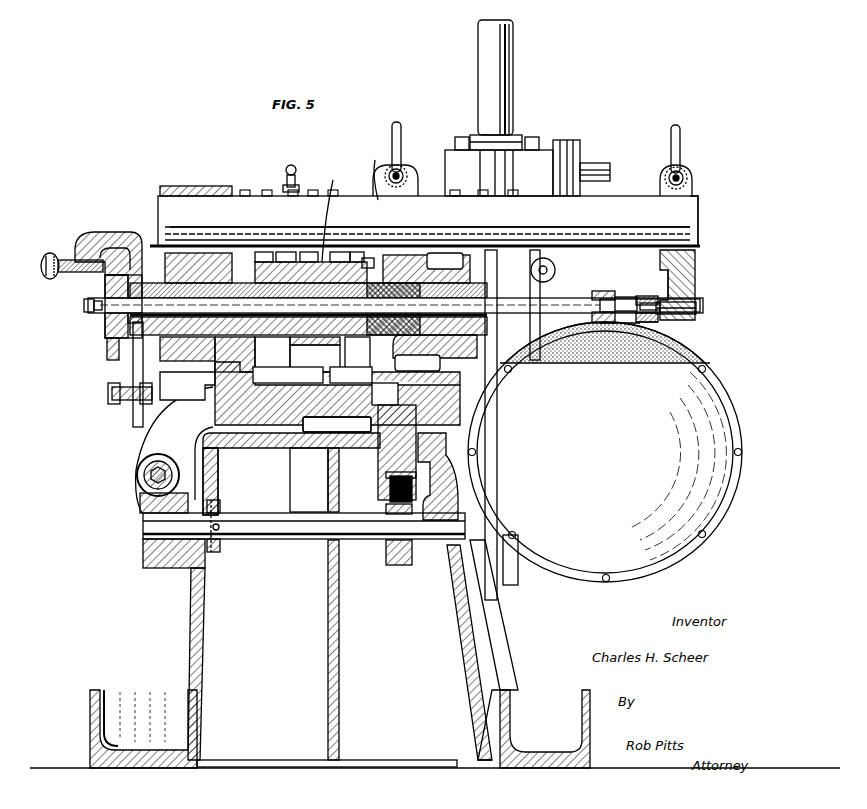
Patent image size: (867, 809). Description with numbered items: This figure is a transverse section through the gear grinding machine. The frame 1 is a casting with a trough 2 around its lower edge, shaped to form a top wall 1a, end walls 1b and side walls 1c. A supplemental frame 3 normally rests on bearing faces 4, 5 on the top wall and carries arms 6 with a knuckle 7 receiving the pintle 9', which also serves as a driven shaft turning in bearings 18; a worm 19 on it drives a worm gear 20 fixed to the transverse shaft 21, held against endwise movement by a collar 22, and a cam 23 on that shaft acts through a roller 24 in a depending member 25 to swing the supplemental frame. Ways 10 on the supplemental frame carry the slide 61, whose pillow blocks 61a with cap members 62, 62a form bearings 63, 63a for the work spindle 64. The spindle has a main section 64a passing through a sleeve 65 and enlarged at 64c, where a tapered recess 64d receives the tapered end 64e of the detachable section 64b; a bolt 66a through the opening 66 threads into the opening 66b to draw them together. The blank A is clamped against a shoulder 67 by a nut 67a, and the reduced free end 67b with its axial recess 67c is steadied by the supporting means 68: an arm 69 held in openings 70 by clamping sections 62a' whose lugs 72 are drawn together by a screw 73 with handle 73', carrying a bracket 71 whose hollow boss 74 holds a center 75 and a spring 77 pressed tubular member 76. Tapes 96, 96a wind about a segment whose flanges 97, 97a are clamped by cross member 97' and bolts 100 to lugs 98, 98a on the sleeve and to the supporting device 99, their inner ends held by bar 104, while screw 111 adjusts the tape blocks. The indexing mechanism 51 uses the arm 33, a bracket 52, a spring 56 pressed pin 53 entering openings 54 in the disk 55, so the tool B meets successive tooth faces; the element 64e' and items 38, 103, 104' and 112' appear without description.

The frame 1 is at (435, 608).
The top wall 1a is at (268, 448).
The end walls 1b is at (304, 604).
The side walls 1c is at (192, 640).
The trough 2 is at (340, 729).
The supplemental frame 3 is at (300, 448).
The bearing face 4 is at (225, 448).
The bearing face 5 is at (428, 452).
The arms 6 is at (296, 230).
The knuckle 7 is at (138, 460).
The pintle 9' is at (132, 480).
The ways 10 is at (378, 468).
The bearings 18 is at (180, 477).
The worm 19 is at (145, 492).
The worm gear 20 is at (165, 568).
The transverse shaft 21 is at (304, 526).
The collar 22 is at (218, 552).
The cam 23 is at (396, 565).
The roller 24 is at (386, 508).
The depending member 25 is at (388, 482).
The arm 33 is at (136, 404).
The bracket 38 is at (512, 582).
The indexing mechanism 51 is at (96, 316).
The bracket 52 is at (122, 232).
The pin 53 is at (70, 260).
The openings 54 is at (108, 345).
The disk 55 is at (110, 362).
The spring 56 is at (60, 280).
The slide or carriage 61 is at (187, 386).
The pillow blocks 61a is at (435, 346).
The cap member 62 is at (198, 268).
The cap member 62a is at (426, 269).
The clamping sections 62a' is at (514, 109).
The bearing 63 is at (144, 392).
The bearing 63a is at (445, 261).
The spindle 64 is at (395, 306).
The main section 64a is at (308, 309).
The detachable section 64b is at (579, 305).
The enlarged portion 64c is at (476, 262).
The recess 64d is at (417, 363).
The tapered end 64e is at (411, 309).
The hub 64e' is at (187, 349).
The sleeve 65 is at (178, 260).
The opening 66 is at (385, 394).
The bolt 66a is at (84, 305).
The opening 66b is at (337, 424).
The shoulder 67 is at (592, 307).
The nut 67a is at (624, 296).
The reduced free end 67b is at (634, 300).
The recess 67c is at (632, 324).
The supporting means 68 is at (709, 221).
The arm 69 is at (425, 221).
The openings 70 is at (213, 200).
The bracket 71 is at (697, 290).
The lug 72 is at (412, 178).
The screw 73 is at (550, 166).
The handle 73' is at (553, 146).
The hollow boss 74 is at (658, 318).
The center 75 is at (650, 324).
The tubular member 76 is at (640, 324).
The coiled spring 77 is at (650, 296).
The tape 96 is at (332, 262).
The tape 96a is at (315, 354).
The flange 97 is at (235, 354).
The flange 97a is at (367, 308).
The cross member 97' is at (337, 393).
The lug or shoulder 98 is at (289, 287).
The lug or shoulder 98a is at (384, 262).
The supporting device 99 is at (357, 354).
The bolts 100 is at (272, 354).
The bolt 103 is at (283, 243).
The bar 104 is at (279, 236).
The plate 104' is at (337, 424).
The screw 111 is at (341, 214).
The knob 112' is at (304, 169).
The blank A is at (604, 290).
The tool B is at (700, 352).